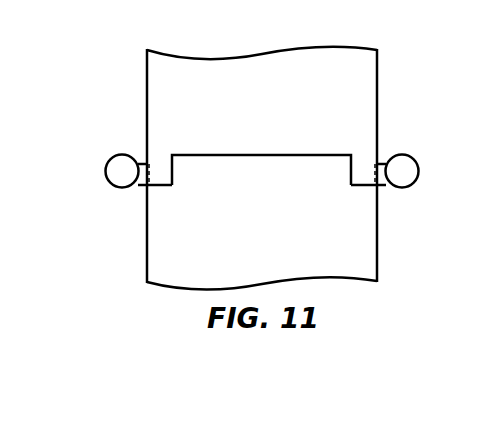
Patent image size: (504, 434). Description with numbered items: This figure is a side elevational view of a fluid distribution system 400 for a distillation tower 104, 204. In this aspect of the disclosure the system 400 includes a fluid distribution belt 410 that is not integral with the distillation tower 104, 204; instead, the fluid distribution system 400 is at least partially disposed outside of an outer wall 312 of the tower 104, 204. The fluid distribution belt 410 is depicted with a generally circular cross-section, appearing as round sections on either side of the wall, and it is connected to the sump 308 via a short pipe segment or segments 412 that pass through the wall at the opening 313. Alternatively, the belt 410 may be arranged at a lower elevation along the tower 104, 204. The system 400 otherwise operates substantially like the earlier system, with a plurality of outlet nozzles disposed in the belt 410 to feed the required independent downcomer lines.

The fluid distribution system 400 is at (84, 68).
The distillation tower 104 is at (313, 168).
The distillation tower 204 is at (378, 90).
The outer wall 312 is at (377, 245).
The sump 308 is at (364, 188).
The slot 313 is at (150, 181).
The fluid distribution belt 410 is at (108, 183).
The short pipe segment 412 is at (385, 186).